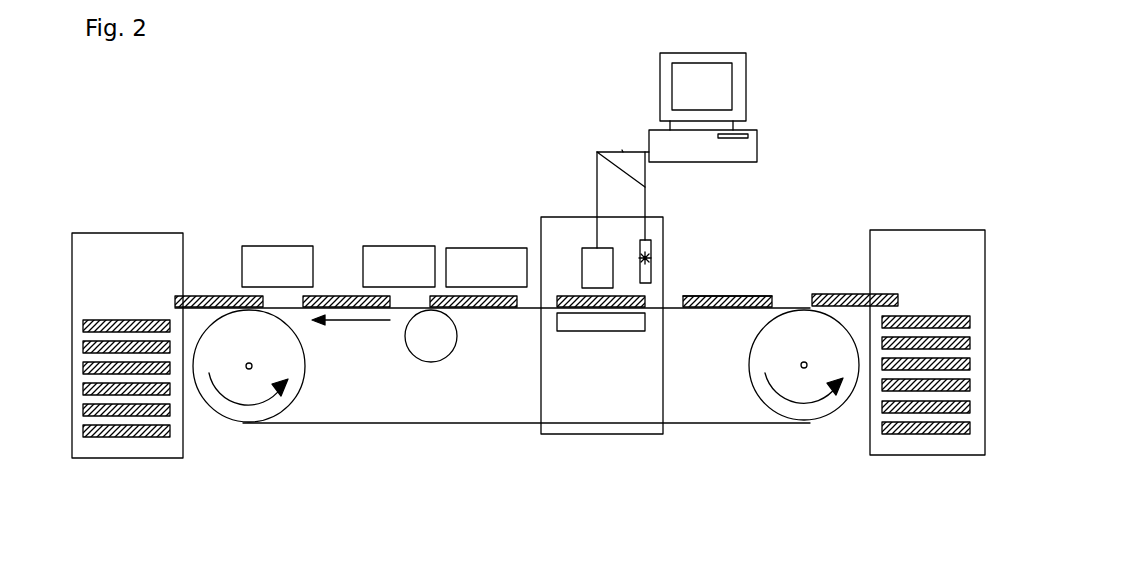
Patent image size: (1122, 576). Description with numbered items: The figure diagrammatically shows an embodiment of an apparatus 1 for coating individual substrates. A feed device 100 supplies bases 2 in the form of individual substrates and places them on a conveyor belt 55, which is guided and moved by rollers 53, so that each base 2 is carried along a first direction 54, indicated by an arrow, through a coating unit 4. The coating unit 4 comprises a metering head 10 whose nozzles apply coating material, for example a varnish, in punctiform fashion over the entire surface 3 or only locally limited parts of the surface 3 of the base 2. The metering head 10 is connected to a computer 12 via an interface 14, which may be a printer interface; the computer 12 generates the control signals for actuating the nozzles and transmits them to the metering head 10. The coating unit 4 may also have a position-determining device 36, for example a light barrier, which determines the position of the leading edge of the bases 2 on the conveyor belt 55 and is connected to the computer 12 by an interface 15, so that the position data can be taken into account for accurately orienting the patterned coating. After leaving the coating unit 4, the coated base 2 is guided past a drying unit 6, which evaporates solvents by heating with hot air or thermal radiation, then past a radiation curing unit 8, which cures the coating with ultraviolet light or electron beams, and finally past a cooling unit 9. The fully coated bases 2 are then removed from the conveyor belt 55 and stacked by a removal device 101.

The apparatus 1 is at (508, 91).
The base 2 is at (212, 297).
The surface 3 is at (740, 297).
The coating unit 4 is at (607, 434).
The drying unit 6 is at (488, 248).
The radiation curing unit 8 is at (397, 246).
The cooling unit 9 is at (275, 245).
The metering head 10 is at (583, 272).
The computer 12 is at (757, 135).
The interface 14 is at (622, 150).
The interface 15 is at (597, 152).
The position-determining device 36 is at (648, 257).
The rollers 53 is at (242, 425).
The first direction 54 is at (355, 323).
The conveyor belt 55 is at (458, 423).
The feed device 100 is at (905, 230).
The removal device 101 is at (138, 232).